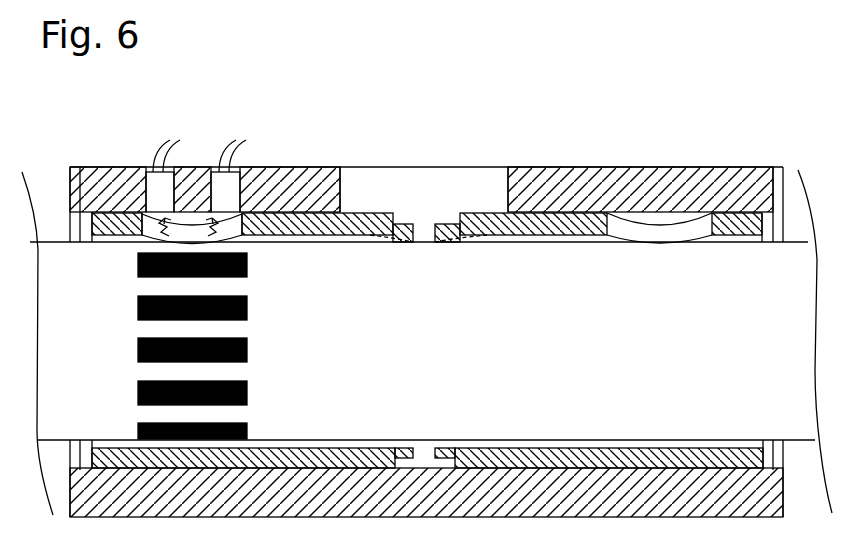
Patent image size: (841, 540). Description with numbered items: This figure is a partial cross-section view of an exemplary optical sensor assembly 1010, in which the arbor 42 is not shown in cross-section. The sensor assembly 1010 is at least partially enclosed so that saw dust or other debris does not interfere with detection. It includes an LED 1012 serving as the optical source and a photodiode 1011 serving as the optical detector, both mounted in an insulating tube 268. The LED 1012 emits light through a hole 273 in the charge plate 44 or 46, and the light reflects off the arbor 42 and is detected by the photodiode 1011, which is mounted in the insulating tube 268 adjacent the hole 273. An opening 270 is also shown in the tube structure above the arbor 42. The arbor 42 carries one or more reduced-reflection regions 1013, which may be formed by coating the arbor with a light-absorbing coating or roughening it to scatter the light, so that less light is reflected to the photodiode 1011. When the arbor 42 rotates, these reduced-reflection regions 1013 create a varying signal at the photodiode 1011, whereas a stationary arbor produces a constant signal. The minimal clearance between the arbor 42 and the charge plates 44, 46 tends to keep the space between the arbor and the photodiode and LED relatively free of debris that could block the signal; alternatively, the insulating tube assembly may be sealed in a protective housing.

The optical sensor assembly 1010 is at (306, 109).
The photodiode 1011 is at (262, 192).
The LED 1012 is at (150, 192).
The reduced-reflection regions 1013 is at (138, 387).
The insulating tube 268 is at (615, 187).
The opening in housing 270 is at (447, 178).
The hole 273 is at (237, 238).
The arbor 42 is at (760, 344).
The charge plate 44 is at (292, 457).
The charge plate 46 is at (575, 458).